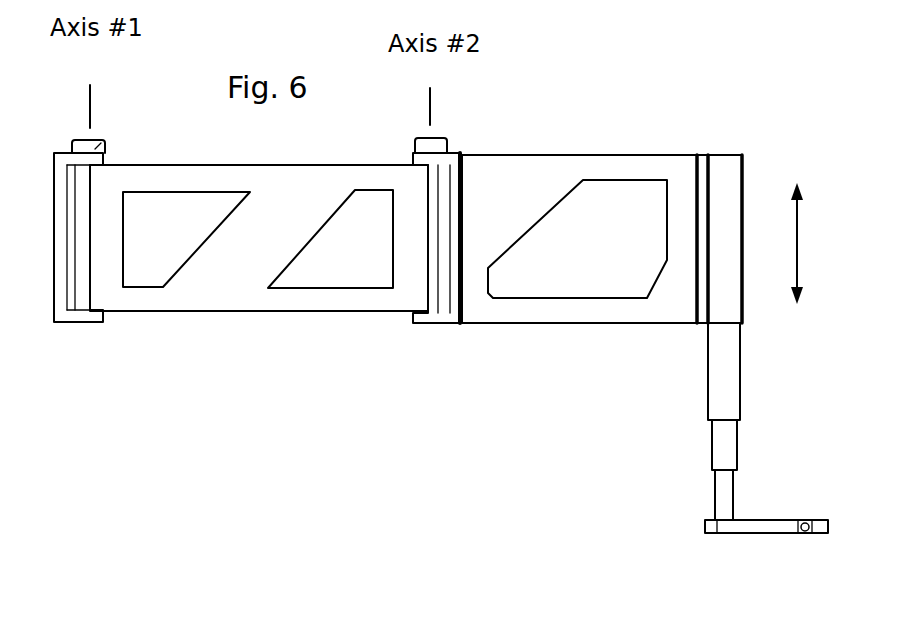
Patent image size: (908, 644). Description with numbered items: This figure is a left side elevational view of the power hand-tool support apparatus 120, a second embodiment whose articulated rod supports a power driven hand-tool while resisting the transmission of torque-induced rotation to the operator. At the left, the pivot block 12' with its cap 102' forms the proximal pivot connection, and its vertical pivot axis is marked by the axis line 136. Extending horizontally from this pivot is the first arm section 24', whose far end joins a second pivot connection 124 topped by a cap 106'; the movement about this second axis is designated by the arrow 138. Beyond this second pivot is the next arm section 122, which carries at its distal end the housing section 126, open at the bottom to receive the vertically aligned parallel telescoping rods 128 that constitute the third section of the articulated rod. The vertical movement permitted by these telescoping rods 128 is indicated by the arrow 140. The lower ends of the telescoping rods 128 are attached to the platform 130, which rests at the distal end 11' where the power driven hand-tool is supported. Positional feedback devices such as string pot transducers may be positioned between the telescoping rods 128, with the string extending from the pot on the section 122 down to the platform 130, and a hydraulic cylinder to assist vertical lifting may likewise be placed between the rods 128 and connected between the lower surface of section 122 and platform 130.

The axis line 136 is at (93, 97).
The first pivot cap 102' is at (121, 131).
The pivot block 12' is at (74, 282).
The first arm segment 24' is at (259, 262).
The arrow 138 is at (428, 105).
The second pivot cap 106' is at (464, 125).
The second pivot bracket 124 is at (450, 152).
The section 122 is at (598, 165).
The housing section 126 is at (728, 220).
The arrow 140 is at (799, 240).
The telescoping rods 128 is at (722, 393).
The platform 130 is at (762, 527).
The distal end 11' is at (841, 505).
The power hand-tool support apparatus 120 is at (430, 380).